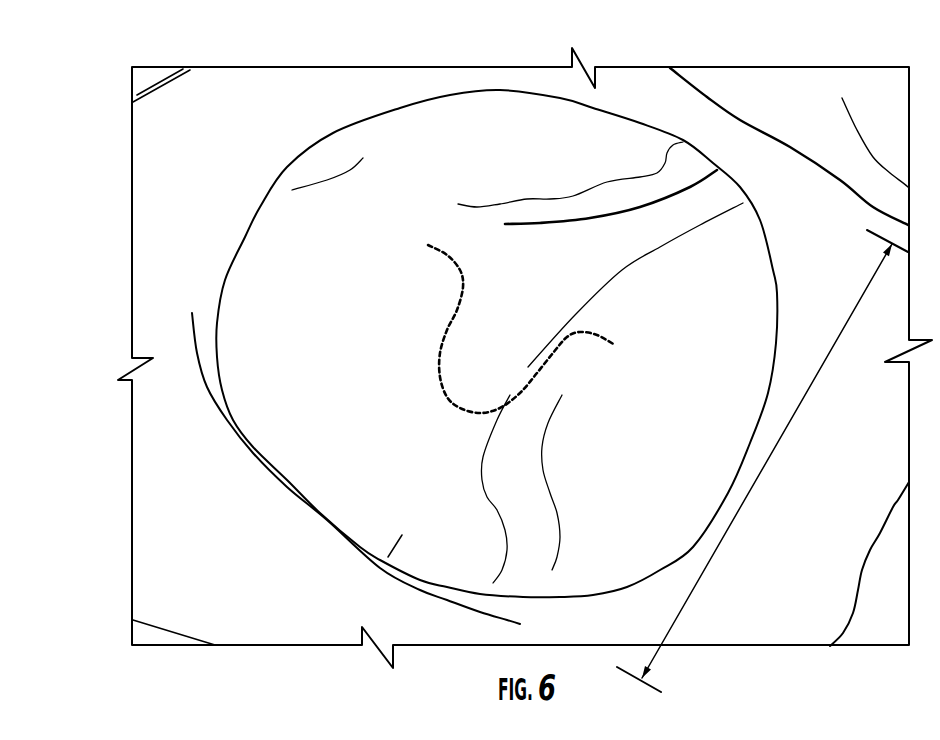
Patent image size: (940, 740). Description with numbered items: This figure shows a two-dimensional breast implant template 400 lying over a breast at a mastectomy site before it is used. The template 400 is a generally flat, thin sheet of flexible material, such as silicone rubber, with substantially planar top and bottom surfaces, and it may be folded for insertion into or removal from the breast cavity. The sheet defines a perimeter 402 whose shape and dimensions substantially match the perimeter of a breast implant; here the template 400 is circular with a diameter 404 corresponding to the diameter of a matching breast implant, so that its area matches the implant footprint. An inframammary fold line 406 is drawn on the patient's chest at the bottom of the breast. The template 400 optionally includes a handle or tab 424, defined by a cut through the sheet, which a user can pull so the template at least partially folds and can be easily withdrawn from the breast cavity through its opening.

The two-dimensional breast implant template 400 is at (243, 110).
The perimeter 402 is at (257, 208).
The diameter 404 is at (792, 420).
The inframammary fold line 406 is at (193, 355).
The tab 424 is at (438, 314).